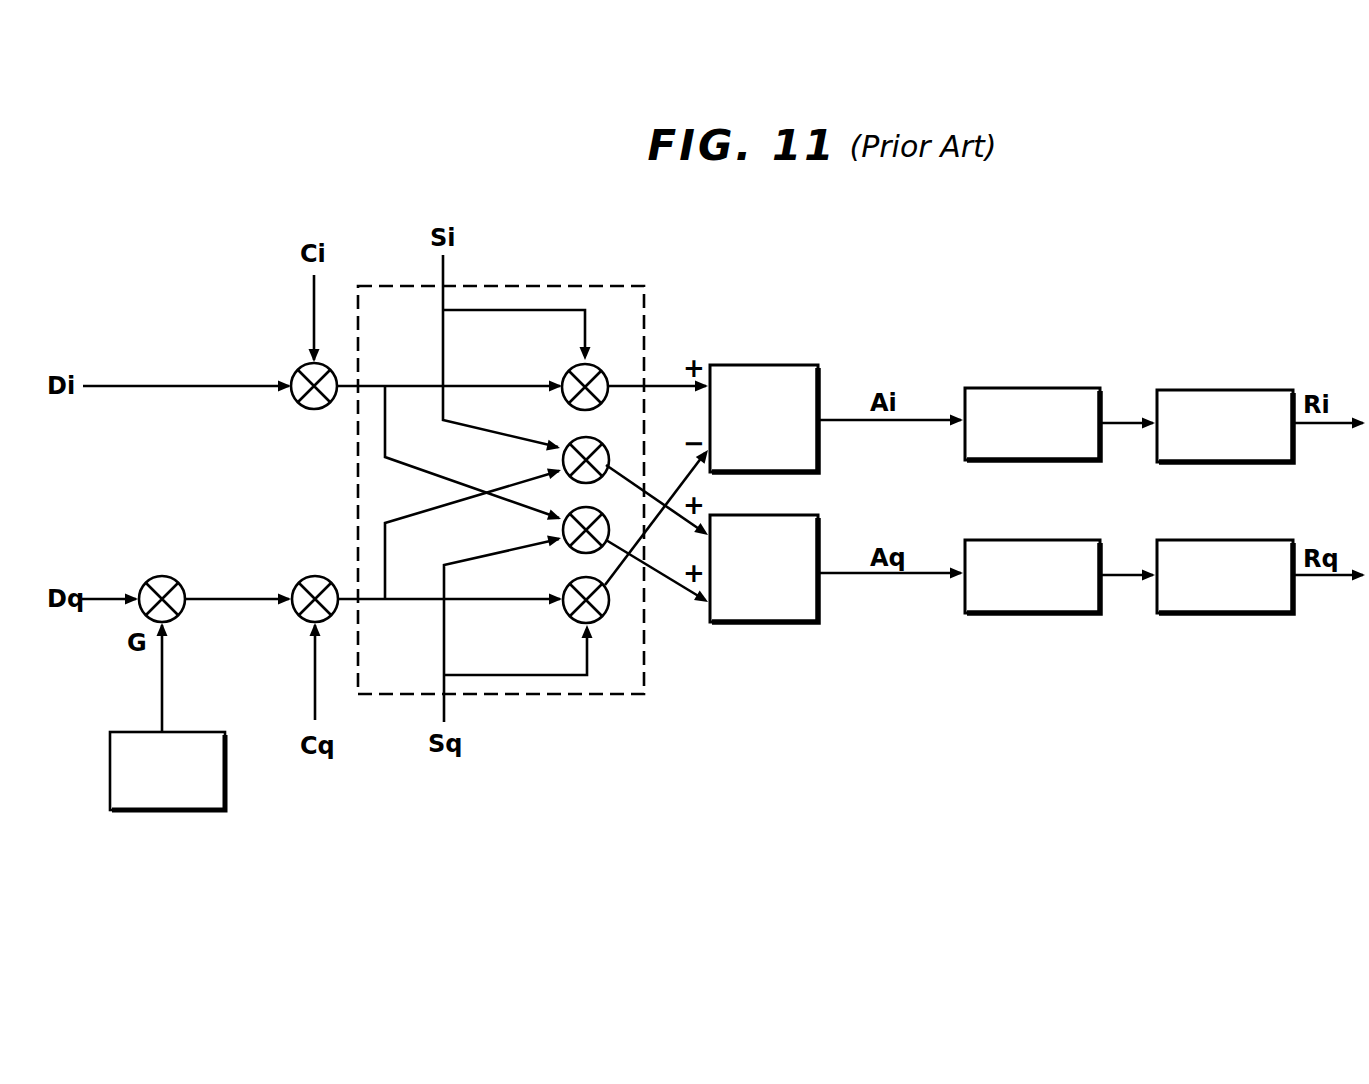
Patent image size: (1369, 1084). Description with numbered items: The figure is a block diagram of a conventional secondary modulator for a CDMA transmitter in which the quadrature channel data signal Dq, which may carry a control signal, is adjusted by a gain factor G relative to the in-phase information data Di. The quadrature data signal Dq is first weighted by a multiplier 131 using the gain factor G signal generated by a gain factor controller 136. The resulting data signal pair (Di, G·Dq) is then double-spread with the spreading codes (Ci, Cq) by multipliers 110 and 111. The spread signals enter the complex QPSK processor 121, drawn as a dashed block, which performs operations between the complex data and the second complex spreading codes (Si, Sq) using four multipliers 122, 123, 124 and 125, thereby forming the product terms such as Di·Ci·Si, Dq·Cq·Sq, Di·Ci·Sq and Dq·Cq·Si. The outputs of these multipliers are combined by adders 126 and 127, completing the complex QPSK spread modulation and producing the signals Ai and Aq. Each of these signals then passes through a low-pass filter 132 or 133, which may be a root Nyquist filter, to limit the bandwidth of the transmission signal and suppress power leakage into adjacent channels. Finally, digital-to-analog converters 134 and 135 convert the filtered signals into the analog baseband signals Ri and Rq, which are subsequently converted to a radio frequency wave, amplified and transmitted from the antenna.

The multiplier 110 is at (297, 368).
The multiplier 111 is at (299, 578).
The complex QPSK processor 121 is at (395, 286).
The multiplier 122 is at (609, 372).
The multiplier 123 is at (608, 444).
The multiplier 124 is at (608, 518).
The multiplier 125 is at (606, 616).
The adder 126 is at (796, 365).
The adder 127 is at (800, 622).
The multiplier 131 is at (179, 578).
The low-pass filter 132 is at (1036, 388).
The low-pass filter 133 is at (1034, 540).
The digital-to-analog converter 134 is at (1222, 390).
The digital-to-analog converter 135 is at (1222, 540).
The gain factor controller 136 is at (171, 812).